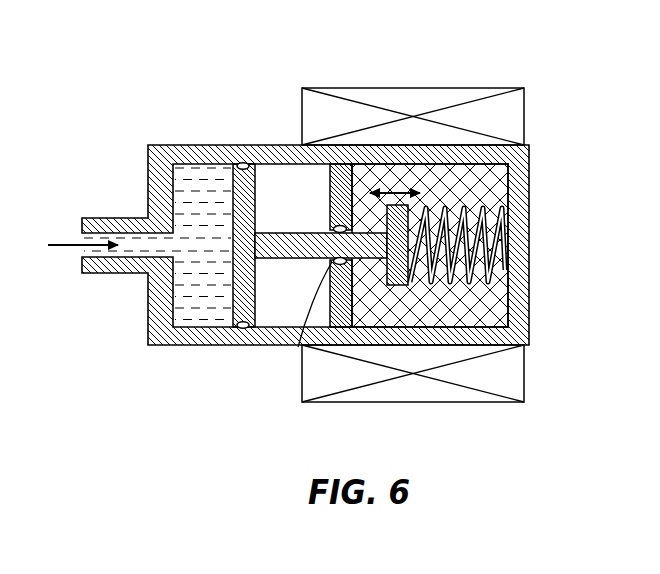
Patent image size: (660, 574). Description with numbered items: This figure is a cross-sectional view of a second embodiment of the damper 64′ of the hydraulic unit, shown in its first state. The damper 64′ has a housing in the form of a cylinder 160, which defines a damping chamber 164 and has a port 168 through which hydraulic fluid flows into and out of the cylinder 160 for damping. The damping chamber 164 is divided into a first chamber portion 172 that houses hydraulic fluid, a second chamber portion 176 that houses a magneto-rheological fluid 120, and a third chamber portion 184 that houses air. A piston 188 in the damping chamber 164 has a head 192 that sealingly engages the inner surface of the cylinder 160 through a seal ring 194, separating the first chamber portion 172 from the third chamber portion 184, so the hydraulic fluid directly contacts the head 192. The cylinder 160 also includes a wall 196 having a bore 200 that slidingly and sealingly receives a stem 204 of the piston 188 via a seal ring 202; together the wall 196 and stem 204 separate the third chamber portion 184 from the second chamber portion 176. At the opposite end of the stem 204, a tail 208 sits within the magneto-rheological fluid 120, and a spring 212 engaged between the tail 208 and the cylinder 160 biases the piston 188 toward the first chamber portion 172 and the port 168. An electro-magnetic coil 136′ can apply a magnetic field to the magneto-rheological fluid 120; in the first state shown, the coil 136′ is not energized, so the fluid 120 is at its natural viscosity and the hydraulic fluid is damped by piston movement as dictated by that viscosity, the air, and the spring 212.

The damper 64′ is at (130, 72).
The magneto-rheological fluid 120 is at (484, 187).
The electro-magnetic coil 136′ is at (442, 88).
The cylinder 160 is at (147, 339).
The damping chamber 164 is at (282, 195).
The port 168 is at (82, 237).
The first chamber portion 172 is at (200, 197).
The second chamber portion 176 is at (458, 180).
The third chamber portion 184 is at (305, 180).
The piston 188 is at (248, 326).
The head 192 is at (243, 277).
The seal ring 194 is at (247, 165).
The wall 196 is at (342, 303).
The bore 200 is at (292, 247).
The seal ring 202 is at (335, 227).
The stem 204 is at (278, 262).
The tail 208 is at (400, 285).
The spring 212 is at (522, 303).